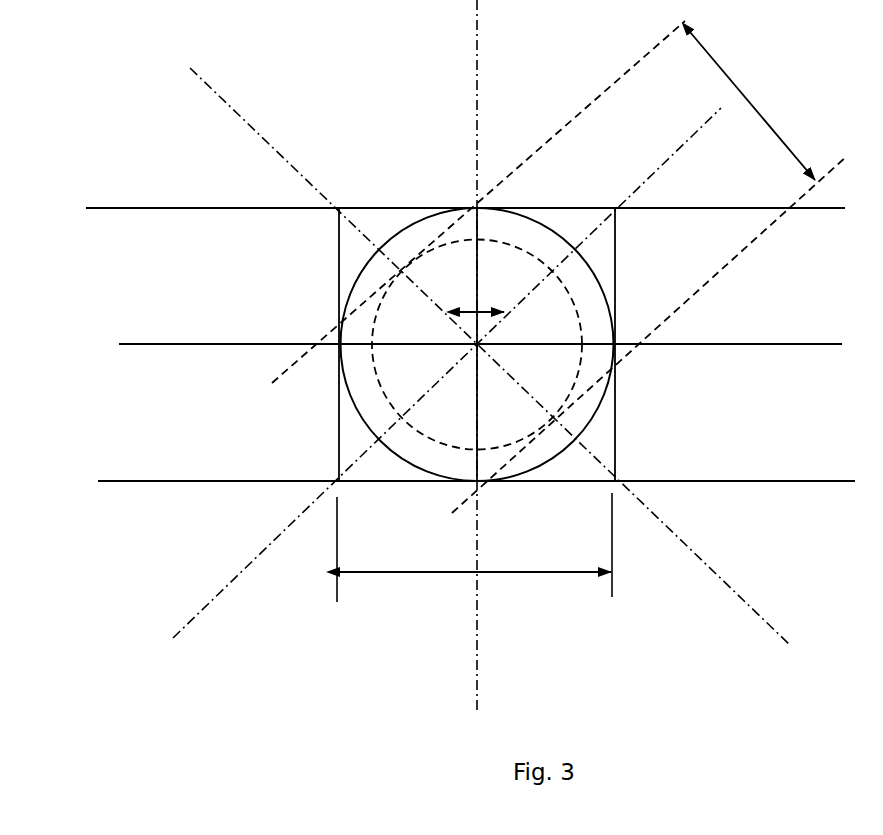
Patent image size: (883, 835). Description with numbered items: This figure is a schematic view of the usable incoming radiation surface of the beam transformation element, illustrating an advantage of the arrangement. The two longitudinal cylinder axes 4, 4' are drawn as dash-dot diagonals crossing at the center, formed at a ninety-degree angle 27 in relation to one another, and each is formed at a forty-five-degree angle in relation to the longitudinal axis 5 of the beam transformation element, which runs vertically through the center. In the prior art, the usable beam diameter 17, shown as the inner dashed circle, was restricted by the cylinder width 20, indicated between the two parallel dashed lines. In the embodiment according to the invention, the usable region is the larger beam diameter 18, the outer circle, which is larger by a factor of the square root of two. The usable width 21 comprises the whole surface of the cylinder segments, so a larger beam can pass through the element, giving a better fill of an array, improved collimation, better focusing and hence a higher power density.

The longitudinal cylinder axis 4 is at (439, 356).
The longitudinal cylinder axis 4' is at (383, 373).
The longitudinal axis of the beam transformation element 5 is at (474, 645).
The usable beam diameter 17 is at (447, 250).
The beam diameter 18 is at (397, 232).
The cylinder width 20 is at (559, 267).
The usable width 21 is at (474, 549).
The angle 27 is at (488, 312).